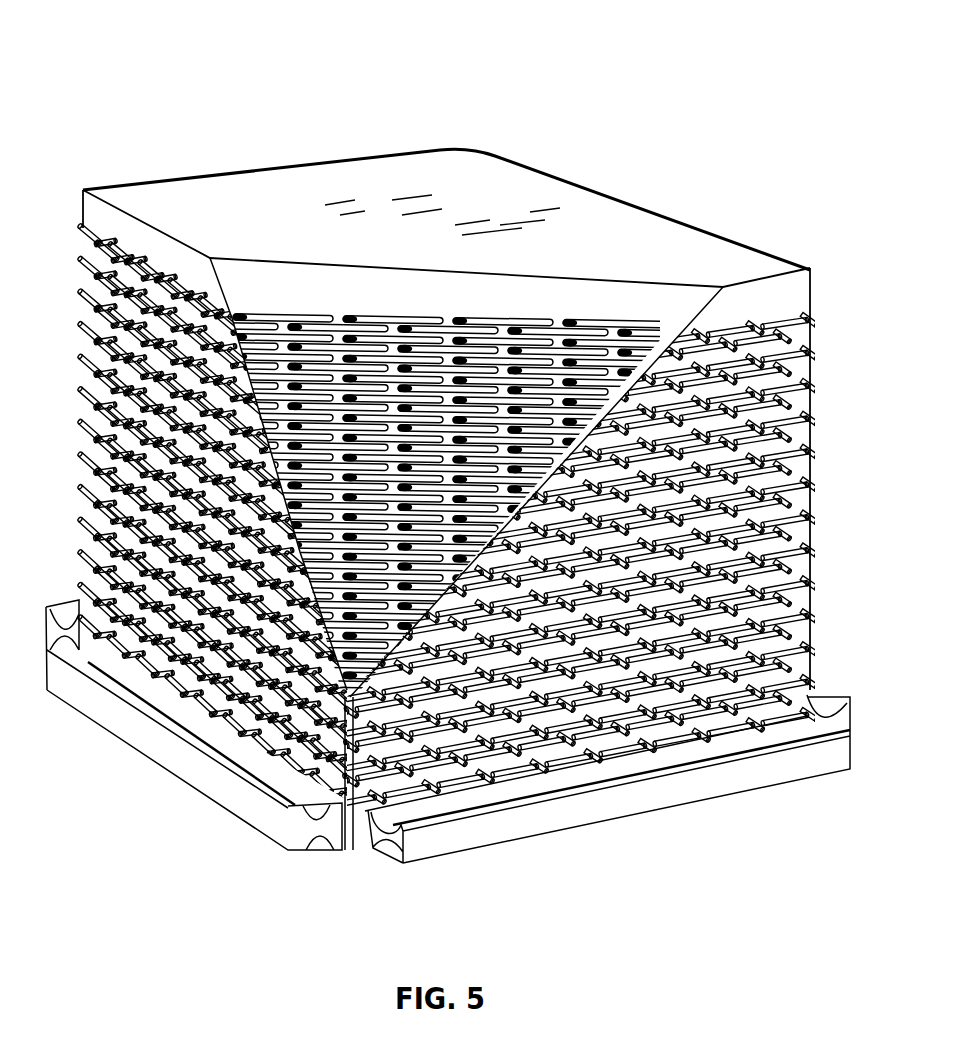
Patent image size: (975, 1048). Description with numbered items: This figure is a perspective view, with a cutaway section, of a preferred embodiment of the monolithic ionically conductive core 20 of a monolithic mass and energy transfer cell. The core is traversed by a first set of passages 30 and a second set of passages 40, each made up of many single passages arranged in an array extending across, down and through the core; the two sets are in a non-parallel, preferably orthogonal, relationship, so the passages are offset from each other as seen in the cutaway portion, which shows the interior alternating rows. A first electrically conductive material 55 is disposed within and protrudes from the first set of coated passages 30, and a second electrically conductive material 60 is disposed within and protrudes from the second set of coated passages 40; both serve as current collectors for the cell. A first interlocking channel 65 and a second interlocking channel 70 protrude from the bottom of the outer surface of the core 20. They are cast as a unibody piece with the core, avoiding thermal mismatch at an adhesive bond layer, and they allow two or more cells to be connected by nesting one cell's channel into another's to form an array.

The monolithic ionically conductive core 20 is at (446, 425).
The first set of passages 30 is at (505, 491).
The second set of passages 40 is at (355, 438).
The first electrically conductive material 55 is at (843, 495).
The second electrically conductive material 60 is at (48, 404).
The first interlocking channel 65 is at (607, 807).
The second interlocking channel 70 is at (177, 725).